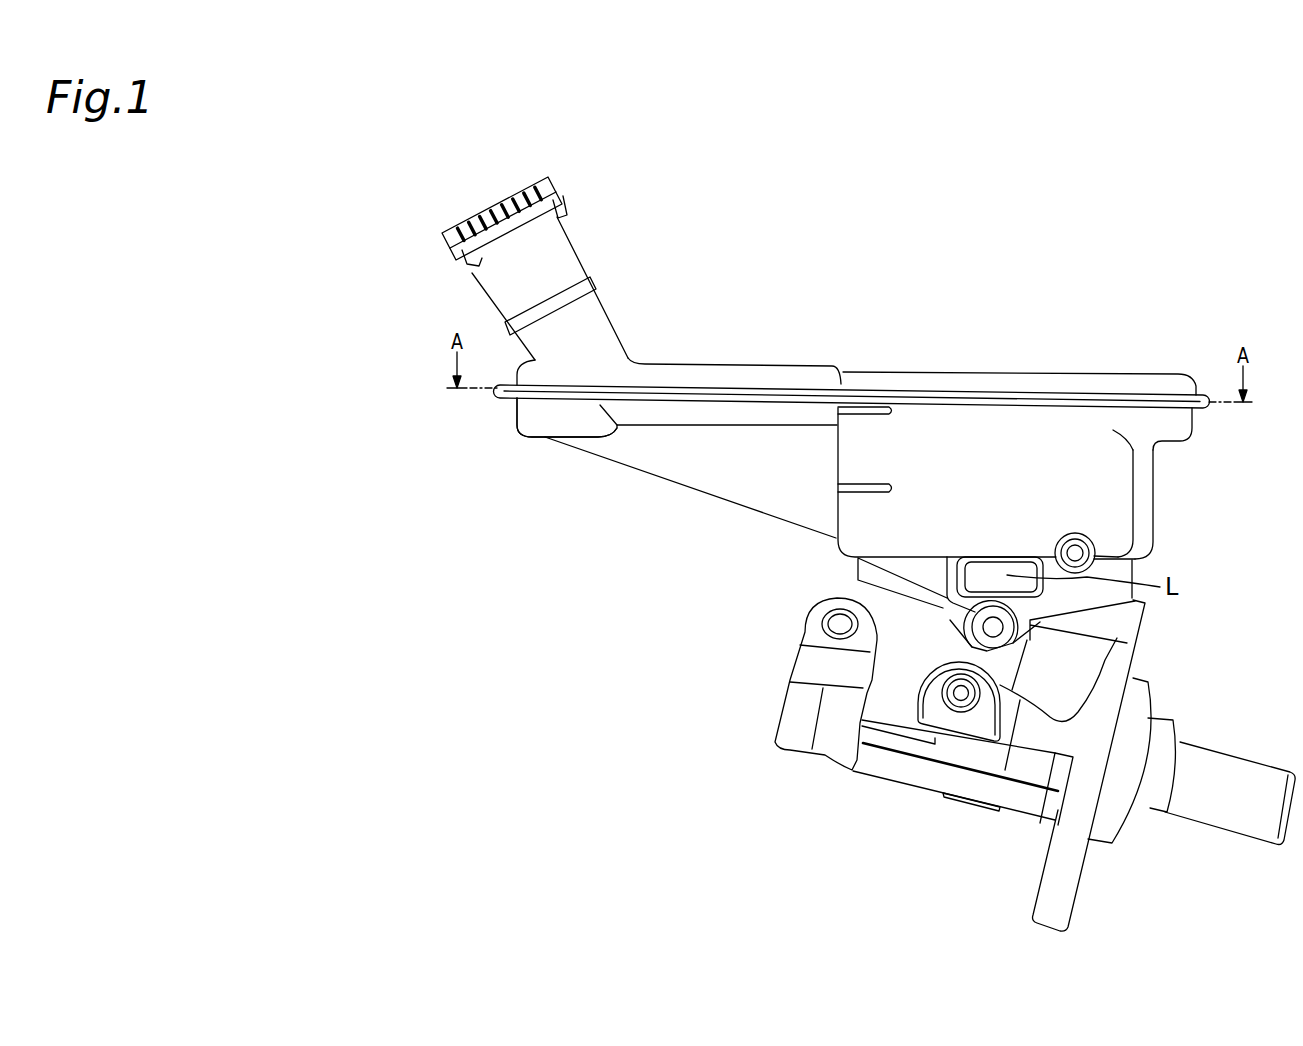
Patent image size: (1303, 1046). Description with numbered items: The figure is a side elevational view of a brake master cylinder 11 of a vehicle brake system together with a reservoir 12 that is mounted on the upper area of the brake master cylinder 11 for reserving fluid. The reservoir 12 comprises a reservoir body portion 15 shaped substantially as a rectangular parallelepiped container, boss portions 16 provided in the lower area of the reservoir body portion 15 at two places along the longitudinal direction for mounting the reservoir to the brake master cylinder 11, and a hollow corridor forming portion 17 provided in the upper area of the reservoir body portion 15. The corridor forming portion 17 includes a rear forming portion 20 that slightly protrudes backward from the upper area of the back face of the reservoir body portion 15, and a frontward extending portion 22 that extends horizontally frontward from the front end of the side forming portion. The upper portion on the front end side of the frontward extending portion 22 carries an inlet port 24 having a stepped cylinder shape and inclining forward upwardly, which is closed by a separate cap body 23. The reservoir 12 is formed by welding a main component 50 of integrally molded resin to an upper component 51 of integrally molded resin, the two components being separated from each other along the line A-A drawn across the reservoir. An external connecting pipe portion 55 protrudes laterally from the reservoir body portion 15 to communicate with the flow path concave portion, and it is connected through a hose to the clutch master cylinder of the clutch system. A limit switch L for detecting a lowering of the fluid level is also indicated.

The brake master cylinder 11 is at (778, 656).
The reservoir 12 is at (1047, 350).
The reservoir body portion 15 is at (1155, 527).
The boss portions 16 is at (867, 565).
The corridor forming portion 17 is at (790, 365).
The rear forming portion 20 is at (1183, 430).
The frontward extending portion 22 is at (729, 370).
The cap body 23 is at (560, 185).
The inlet port 24 is at (570, 255).
The main component 50 is at (1168, 484).
The upper component 51 is at (1169, 357).
The external connecting pipe portion 55 is at (1087, 551).